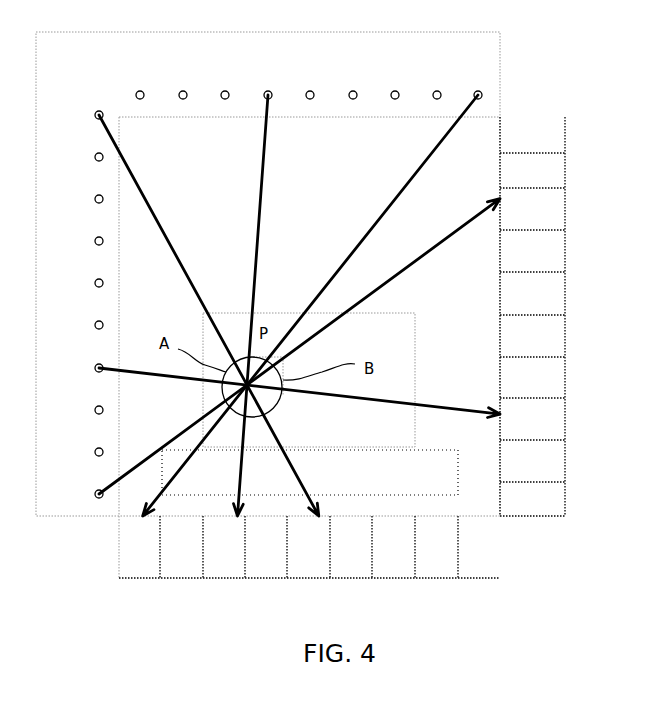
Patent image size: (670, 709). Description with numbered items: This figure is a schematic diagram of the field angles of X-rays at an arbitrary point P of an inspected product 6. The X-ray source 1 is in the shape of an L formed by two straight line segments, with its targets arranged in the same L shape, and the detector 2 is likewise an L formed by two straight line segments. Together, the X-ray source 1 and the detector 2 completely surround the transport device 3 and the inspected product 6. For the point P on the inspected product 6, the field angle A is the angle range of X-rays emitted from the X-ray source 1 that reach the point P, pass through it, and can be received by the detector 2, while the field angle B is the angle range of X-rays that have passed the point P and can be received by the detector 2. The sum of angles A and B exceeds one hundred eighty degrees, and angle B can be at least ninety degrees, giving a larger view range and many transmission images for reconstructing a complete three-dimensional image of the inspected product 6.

The X-ray source 1 is at (483, 57).
The detector 2 is at (548, 288).
The transport device 3 is at (310, 473).
The inspected product 6 is at (271, 390).